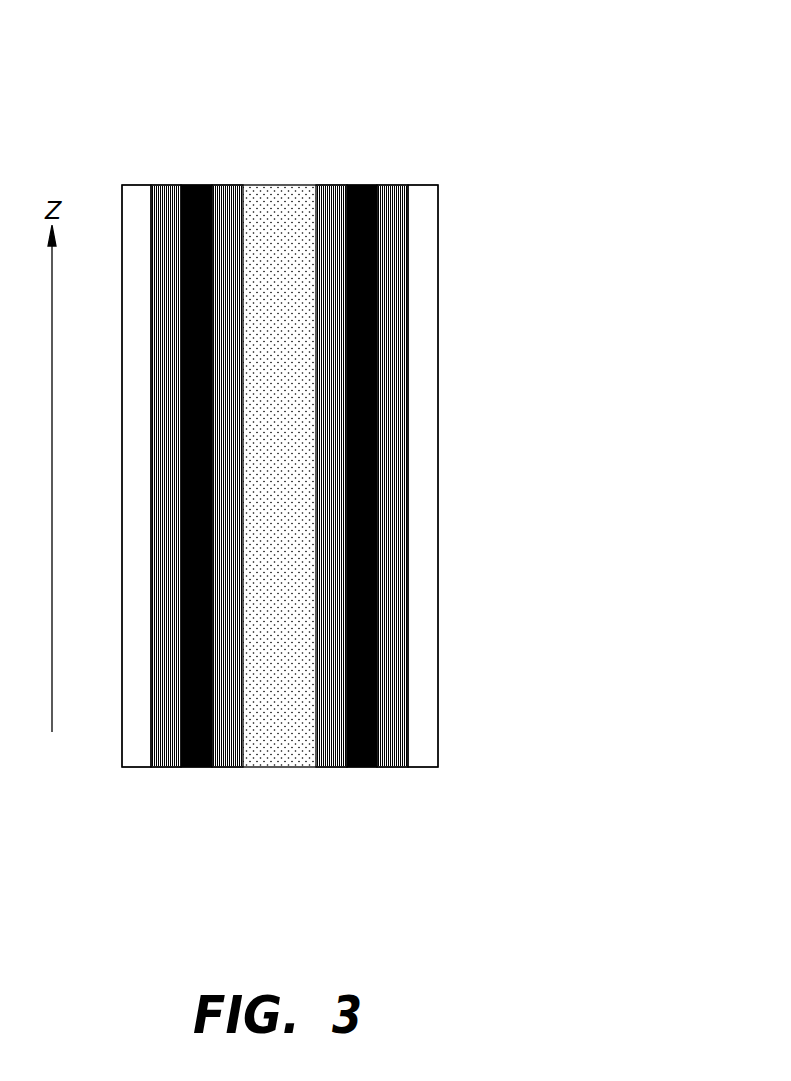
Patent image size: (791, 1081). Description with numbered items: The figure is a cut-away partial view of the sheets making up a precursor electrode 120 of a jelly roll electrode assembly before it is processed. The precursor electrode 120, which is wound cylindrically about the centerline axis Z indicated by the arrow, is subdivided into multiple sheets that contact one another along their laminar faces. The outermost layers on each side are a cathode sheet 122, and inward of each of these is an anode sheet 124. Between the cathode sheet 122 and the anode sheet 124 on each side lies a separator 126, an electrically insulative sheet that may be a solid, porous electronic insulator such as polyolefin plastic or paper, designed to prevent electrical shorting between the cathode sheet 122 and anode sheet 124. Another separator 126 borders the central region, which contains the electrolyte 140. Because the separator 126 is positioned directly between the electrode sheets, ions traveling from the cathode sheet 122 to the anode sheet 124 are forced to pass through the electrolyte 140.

The precursor electrode 120 is at (311, 103).
The cathode sheet 122 is at (137, 760).
The anode sheet 124 is at (198, 760).
The separator 126 is at (166, 192).
The electrolyte 140 is at (298, 488).